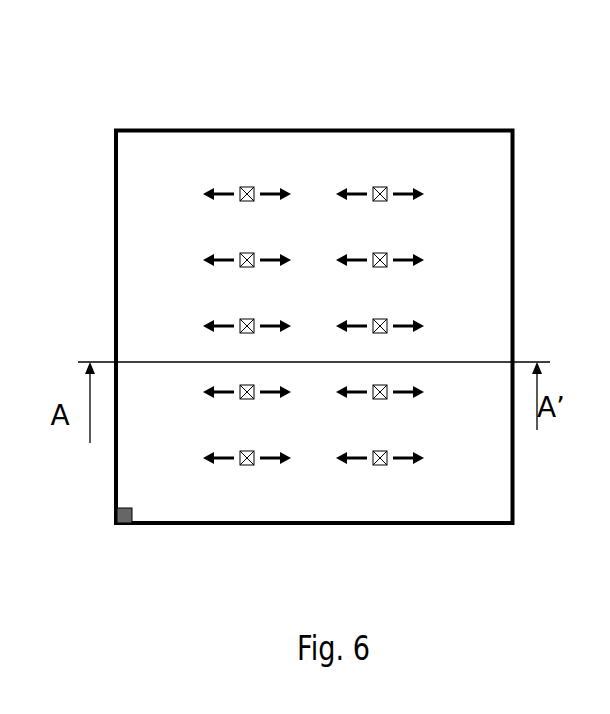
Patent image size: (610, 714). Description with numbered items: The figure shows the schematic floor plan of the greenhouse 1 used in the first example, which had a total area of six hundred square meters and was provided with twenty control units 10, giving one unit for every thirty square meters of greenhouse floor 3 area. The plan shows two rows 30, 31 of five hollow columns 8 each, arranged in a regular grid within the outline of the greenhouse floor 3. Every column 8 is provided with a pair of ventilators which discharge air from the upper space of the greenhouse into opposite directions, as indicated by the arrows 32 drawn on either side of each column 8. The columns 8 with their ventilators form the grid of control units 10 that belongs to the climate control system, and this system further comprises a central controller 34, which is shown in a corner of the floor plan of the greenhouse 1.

The greenhouse 1 is at (329, 329).
The greenhouse floor 3 is at (458, 472).
The hollow column 8 is at (247, 188).
The control unit 10 is at (395, 351).
The first row of columns 30 is at (247, 498).
The second row of columns 31 is at (379, 498).
The arrows 32 is at (277, 192).
The central controller 34 is at (126, 525).